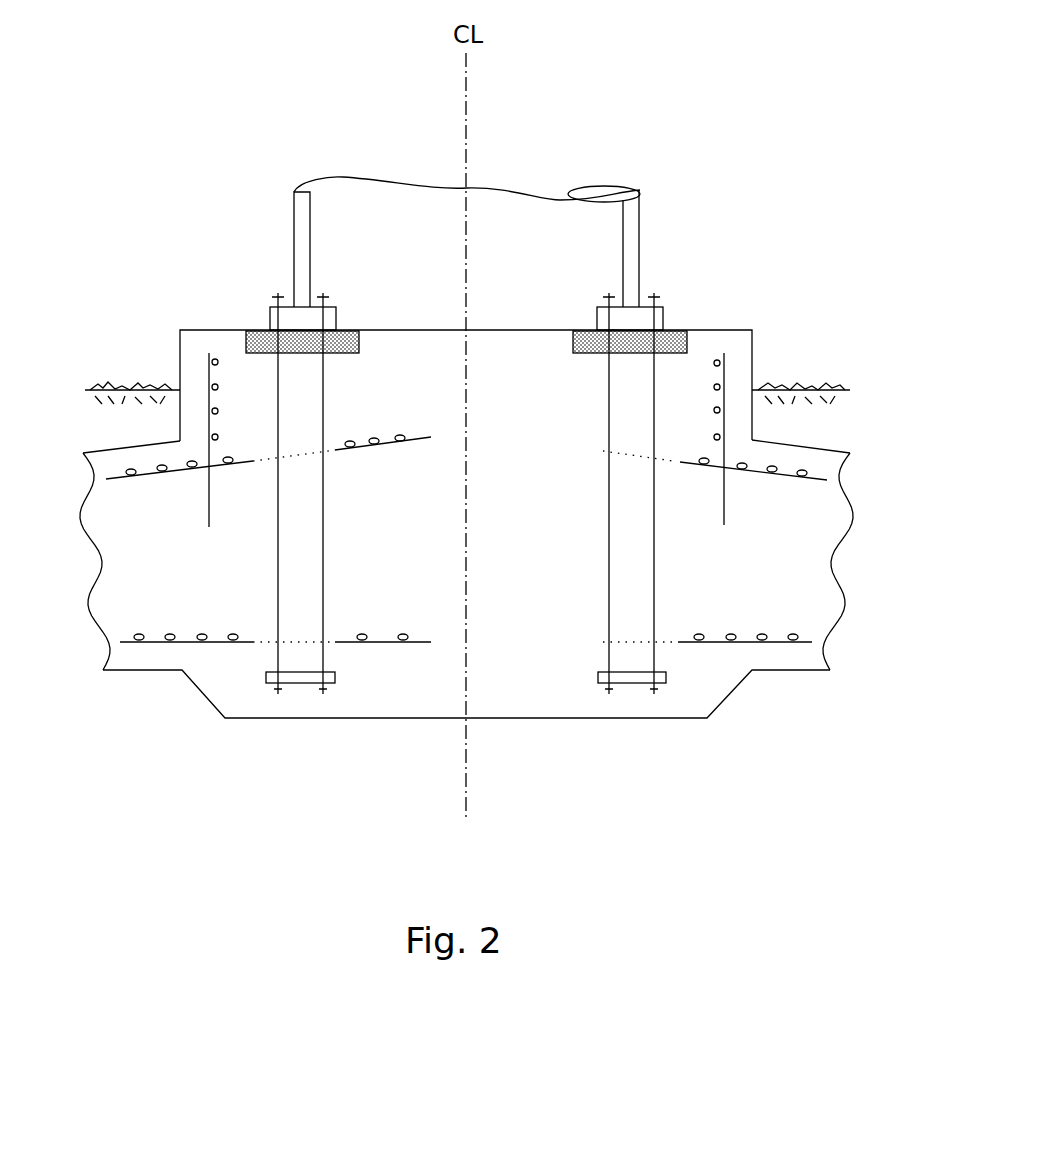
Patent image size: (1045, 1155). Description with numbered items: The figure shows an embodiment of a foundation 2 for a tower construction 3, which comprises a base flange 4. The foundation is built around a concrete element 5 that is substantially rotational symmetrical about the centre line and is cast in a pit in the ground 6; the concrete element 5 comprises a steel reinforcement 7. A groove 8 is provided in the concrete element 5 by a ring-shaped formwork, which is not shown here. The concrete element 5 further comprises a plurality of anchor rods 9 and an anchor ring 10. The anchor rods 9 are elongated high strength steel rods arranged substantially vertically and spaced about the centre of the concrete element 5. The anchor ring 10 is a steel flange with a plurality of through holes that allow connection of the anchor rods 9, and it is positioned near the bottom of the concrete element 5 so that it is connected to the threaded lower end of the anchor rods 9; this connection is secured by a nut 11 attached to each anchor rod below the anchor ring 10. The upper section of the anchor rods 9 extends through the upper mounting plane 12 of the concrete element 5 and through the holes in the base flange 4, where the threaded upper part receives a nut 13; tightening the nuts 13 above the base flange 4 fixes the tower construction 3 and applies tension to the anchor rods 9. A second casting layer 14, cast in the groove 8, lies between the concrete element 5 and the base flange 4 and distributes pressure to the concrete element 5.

The foundation 2 is at (712, 94).
The tower construction 3 is at (390, 205).
The base flange 4 is at (663, 317).
The concrete element 5 is at (548, 698).
The ground 6 is at (833, 382).
The steel reinforcement 7 is at (730, 473).
The groove 8 is at (342, 353).
The anchor rods 9 is at (280, 552).
The anchor ring 10 is at (335, 678).
The nut 11 is at (323, 691).
The upper mounting plane 12 is at (190, 328).
The nut 13 is at (610, 293).
The second casting layer 14 is at (663, 353).